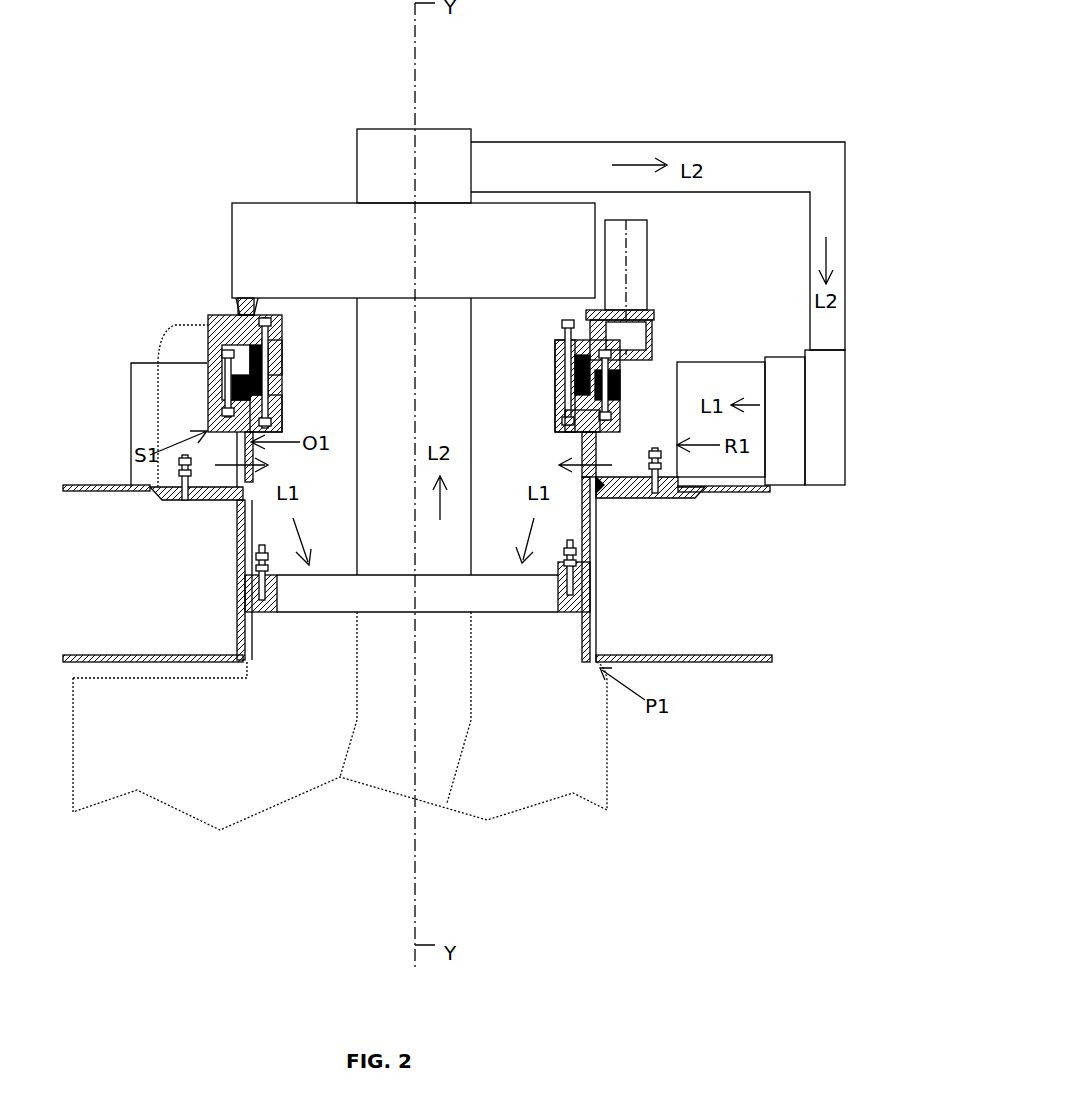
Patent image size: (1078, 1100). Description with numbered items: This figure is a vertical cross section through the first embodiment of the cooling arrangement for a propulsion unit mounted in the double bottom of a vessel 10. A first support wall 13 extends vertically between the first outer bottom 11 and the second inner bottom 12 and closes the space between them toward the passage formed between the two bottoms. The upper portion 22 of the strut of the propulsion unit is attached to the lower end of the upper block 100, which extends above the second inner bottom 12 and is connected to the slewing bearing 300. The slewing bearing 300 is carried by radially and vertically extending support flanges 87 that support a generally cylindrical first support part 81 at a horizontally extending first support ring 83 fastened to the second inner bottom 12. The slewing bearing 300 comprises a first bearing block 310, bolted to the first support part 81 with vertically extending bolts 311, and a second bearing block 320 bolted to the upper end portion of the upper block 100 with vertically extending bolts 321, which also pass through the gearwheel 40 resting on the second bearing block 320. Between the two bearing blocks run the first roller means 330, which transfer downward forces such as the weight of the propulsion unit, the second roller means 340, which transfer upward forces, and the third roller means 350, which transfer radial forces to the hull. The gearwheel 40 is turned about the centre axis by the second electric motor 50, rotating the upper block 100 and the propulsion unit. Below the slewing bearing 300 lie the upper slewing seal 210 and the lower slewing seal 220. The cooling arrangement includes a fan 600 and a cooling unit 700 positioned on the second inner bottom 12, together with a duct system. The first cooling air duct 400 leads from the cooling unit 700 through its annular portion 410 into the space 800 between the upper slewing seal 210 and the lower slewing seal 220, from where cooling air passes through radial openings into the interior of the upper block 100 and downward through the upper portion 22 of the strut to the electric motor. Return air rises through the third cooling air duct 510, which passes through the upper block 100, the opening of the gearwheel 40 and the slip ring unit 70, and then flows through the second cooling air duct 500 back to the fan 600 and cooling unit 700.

The vessel 10 is at (750, 27).
The first outer bottom 11 is at (728, 663).
The second inner bottom 12 is at (720, 493).
The first support wall 13 is at (236, 626).
The upper portion of the strut 22 is at (562, 657).
The gearwheel 40 is at (250, 310).
The second electric motor 50 is at (648, 255).
The slip ring unit 70 is at (240, 203).
The first support part 81 is at (213, 410).
The first support ring 83 is at (668, 500).
The support flanges 87 is at (182, 325).
The upper block 100 is at (582, 432).
The upper slewing seal 210 is at (570, 420).
The lower slewing seal 220 is at (609, 506).
The slewing bearing 300 is at (540, 352).
The first bearing block 310 is at (622, 385).
The bolts 311 is at (228, 358).
The second bearing block 320 is at (540, 387).
The bolts 321 is at (268, 325).
The first roller means 330 is at (285, 365).
The second roller means 340 is at (283, 398).
The third roller means 350 is at (285, 385).
The first cooling air duct 400 is at (718, 362).
The annular portion 410 is at (140, 403).
The second cooling air duct 500 is at (572, 141).
The third cooling air duct 510 is at (402, 540).
The fan 600 is at (826, 487).
The cooling unit 700 is at (777, 360).
The space 800 is at (637, 450).